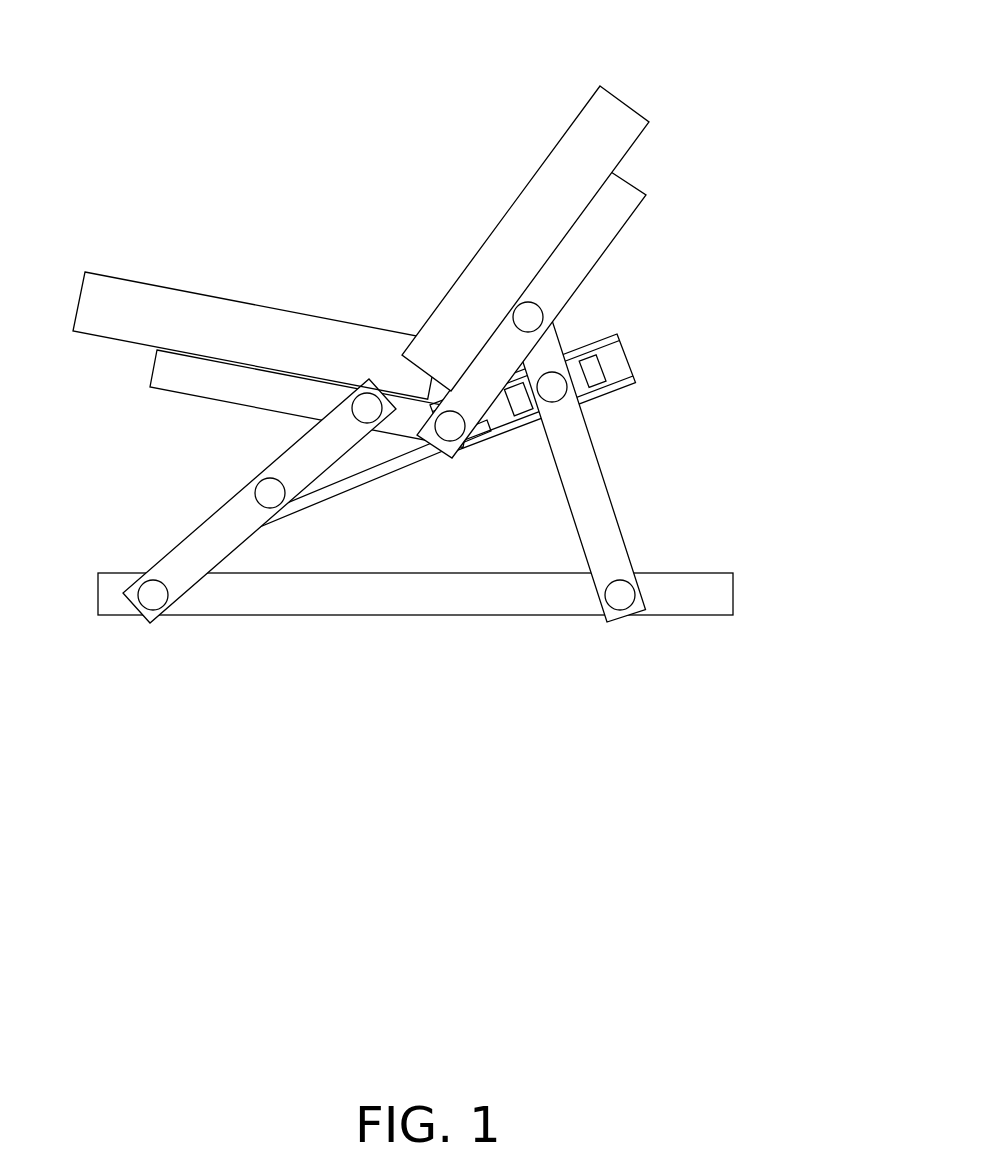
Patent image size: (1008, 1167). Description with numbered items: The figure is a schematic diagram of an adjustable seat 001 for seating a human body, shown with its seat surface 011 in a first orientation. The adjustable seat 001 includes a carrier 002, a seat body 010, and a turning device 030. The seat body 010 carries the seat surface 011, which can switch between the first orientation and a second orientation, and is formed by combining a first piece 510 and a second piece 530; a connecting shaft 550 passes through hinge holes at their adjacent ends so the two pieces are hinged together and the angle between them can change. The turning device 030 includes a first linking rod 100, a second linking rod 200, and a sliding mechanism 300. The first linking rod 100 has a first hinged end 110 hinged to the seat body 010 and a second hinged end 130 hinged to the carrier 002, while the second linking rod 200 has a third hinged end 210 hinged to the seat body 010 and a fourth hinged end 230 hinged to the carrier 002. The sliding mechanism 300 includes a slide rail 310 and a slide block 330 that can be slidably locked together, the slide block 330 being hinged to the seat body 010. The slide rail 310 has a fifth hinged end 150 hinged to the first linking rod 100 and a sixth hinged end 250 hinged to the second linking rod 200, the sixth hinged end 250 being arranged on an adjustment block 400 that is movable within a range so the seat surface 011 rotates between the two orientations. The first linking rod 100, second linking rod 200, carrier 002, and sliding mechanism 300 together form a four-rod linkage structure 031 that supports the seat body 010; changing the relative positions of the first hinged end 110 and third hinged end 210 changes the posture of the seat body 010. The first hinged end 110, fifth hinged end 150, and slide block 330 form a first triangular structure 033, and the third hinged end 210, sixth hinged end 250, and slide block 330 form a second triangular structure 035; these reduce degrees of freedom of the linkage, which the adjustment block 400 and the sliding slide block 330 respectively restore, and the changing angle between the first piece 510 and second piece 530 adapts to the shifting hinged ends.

The adjustable seat 001 is at (388, 32).
The carrier 002 is at (472, 598).
The seat body 010 is at (361, 242).
The seat surface 011 is at (242, 302).
The turning device 030 is at (550, 499).
The four-rod linkage structure 031 is at (592, 698).
The first triangular structure 033 is at (259, 539).
The second triangular structure 035 is at (609, 491).
The first linking rod 100 is at (247, 540).
The first hinged end 110 is at (367, 408).
The second hinged end 130 is at (153, 595).
The fifth hinged end 150 is at (270, 493).
The second linking rod 200 is at (607, 548).
The third hinged end 210 is at (528, 317).
The fourth hinged end 230 is at (620, 595).
The sixth hinged end 250 is at (552, 387).
The sliding mechanism 300 is at (516, 517).
The slide rail 310 is at (606, 394).
The slide block 330 is at (488, 419).
The adjustment block 400 is at (582, 375).
The first piece 510 is at (605, 220).
The second piece 530 is at (208, 386).
The connecting shaft 550 is at (450, 426).